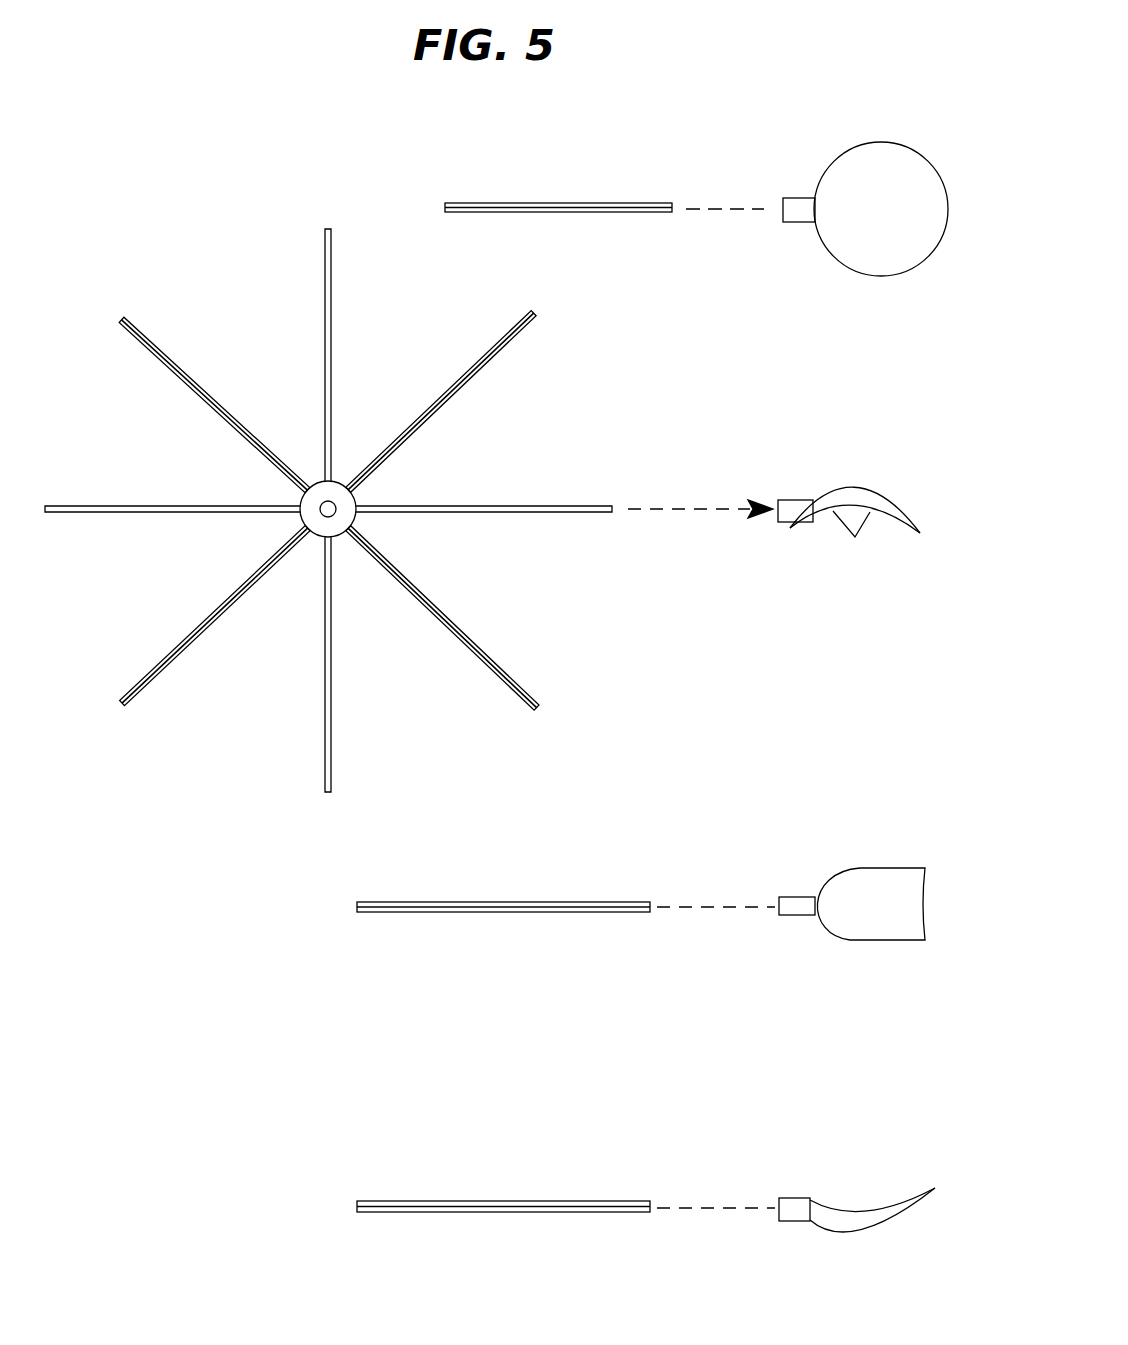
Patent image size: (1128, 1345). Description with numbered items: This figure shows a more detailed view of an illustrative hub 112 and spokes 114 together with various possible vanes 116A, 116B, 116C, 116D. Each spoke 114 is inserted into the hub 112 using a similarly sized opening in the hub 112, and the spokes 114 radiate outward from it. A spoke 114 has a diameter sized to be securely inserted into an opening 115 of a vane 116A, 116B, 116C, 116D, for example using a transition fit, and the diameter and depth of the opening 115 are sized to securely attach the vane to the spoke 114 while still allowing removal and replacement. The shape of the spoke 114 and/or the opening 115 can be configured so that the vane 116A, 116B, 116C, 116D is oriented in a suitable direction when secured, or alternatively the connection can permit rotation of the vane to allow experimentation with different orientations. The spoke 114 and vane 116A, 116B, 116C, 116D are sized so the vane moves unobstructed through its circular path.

The hub 112 is at (318, 492).
The spoke 114 is at (466, 506).
The opening 115 is at (752, 504).
The vane 116A is at (906, 143).
The vane 116B is at (855, 487).
The vane 116C is at (873, 865).
The vane 116D is at (852, 1212).